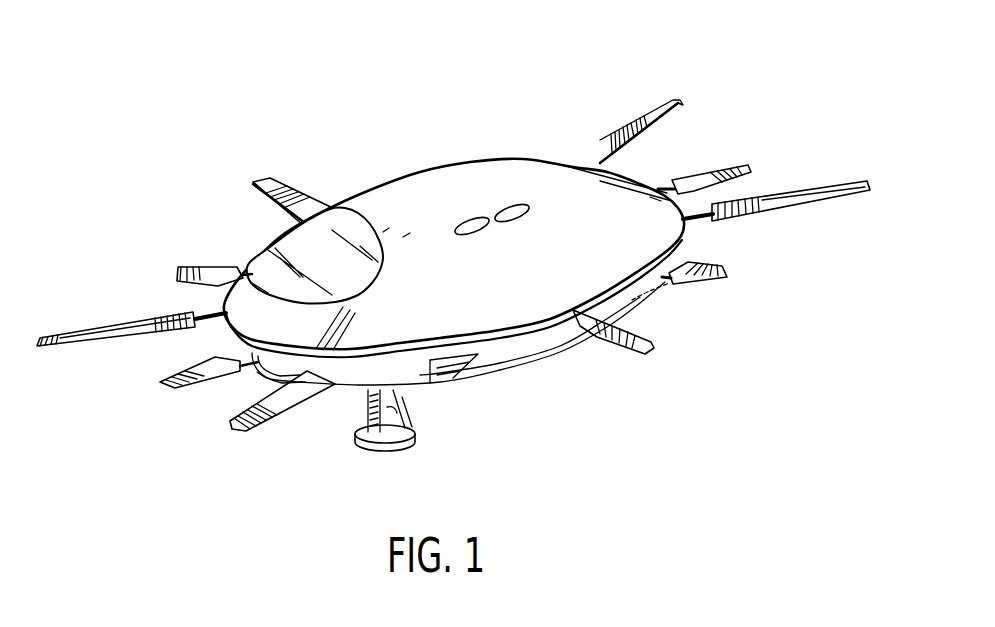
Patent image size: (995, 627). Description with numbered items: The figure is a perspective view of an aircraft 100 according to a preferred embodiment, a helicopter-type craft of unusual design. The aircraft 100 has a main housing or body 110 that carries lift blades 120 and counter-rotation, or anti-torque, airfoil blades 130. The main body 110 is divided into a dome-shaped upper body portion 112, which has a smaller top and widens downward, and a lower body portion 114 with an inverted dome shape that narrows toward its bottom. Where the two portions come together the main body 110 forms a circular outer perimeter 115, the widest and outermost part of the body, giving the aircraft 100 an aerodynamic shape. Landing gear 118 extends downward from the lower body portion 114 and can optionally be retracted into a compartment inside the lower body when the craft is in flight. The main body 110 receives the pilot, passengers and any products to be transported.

The aircraft 100 is at (466, 97).
The main body 110 is at (531, 145).
The upper body portion 112 is at (387, 207).
The lower body portion 114 is at (505, 363).
The outer perimeter 115 is at (636, 184).
The landing gear 118 is at (364, 401).
The lift blades 120 is at (780, 200).
The counter-rotation airfoil blades 130 is at (706, 280).